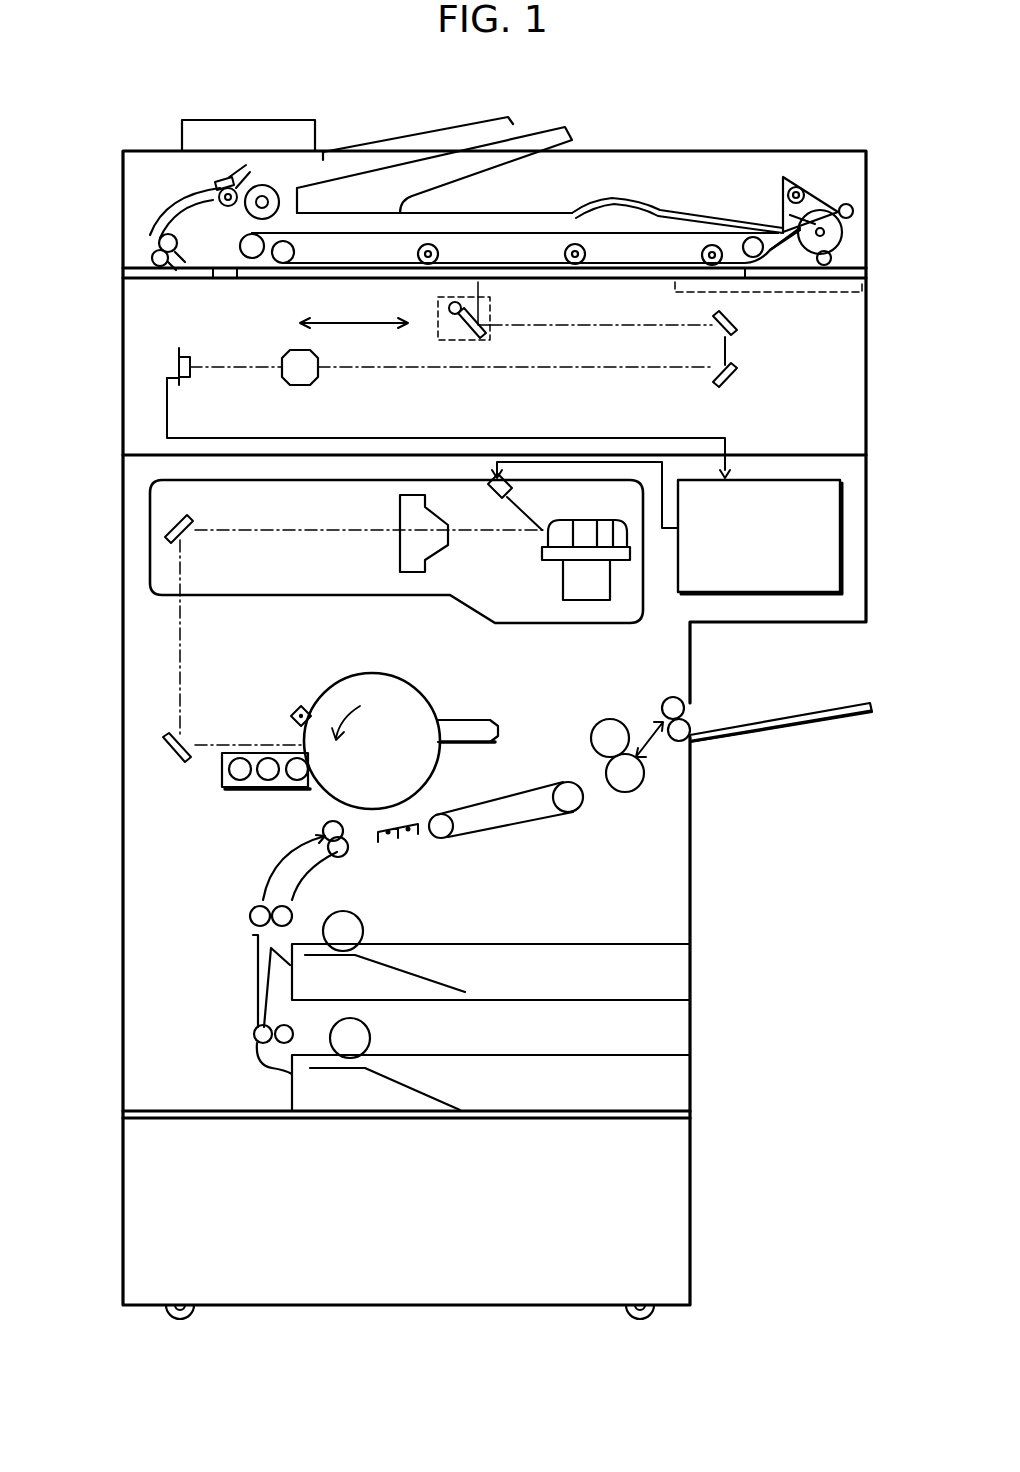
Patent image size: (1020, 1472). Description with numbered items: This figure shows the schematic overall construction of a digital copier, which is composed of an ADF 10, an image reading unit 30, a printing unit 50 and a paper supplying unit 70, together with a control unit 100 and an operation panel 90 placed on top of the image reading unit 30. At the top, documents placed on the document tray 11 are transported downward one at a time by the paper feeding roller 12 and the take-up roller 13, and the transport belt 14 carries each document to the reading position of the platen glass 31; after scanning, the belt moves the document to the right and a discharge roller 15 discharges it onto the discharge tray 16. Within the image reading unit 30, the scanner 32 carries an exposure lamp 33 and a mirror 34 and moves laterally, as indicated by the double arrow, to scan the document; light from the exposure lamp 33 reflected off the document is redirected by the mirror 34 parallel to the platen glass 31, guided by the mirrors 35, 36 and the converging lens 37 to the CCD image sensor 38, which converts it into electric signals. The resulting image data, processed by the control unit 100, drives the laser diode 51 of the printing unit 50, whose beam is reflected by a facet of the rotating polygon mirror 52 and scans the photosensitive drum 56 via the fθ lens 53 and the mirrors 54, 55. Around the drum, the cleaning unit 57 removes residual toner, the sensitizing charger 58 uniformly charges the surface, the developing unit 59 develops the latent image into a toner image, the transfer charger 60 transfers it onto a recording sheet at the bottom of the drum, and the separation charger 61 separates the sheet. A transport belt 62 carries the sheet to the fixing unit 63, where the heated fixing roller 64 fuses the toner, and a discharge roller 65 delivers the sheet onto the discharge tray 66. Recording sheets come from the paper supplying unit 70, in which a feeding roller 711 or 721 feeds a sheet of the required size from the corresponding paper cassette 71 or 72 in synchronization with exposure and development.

The ADF 10 is at (107, 215).
The document tray 11 is at (433, 131).
The paper feeding roller 12 is at (268, 185).
The take-up roller 13 is at (232, 165).
The transport belt 14 is at (478, 232).
The discharge roller 15 is at (804, 190).
The discharge tray 16 is at (678, 198).
The image reading unit 30 is at (107, 360).
The platen glass 31 is at (620, 280).
The scanner 32 is at (492, 310).
The exposure lamp 33 is at (448, 305).
The mirror 34 is at (490, 332).
The mirror 35 is at (737, 322).
The mirror 36 is at (732, 382).
The converging lens 37 is at (288, 382).
The CCD image sensor 38 is at (192, 362).
The printing unit 50 is at (107, 615).
The laser diode 51 is at (487, 490).
The polygon mirror 52 is at (562, 570).
The fθ lens 53 is at (400, 556).
The mirror 54 is at (183, 520).
The mirror 55 is at (166, 730).
The photosensitive drum 56 is at (392, 672).
The cleaning unit 57 is at (496, 722).
The sensitizing charger 58 is at (294, 706).
The developing unit 59 is at (232, 795).
The transfer charger 60 is at (384, 842).
The separation charger 61 is at (418, 838).
The transport belt 62 is at (470, 800).
The fixing unit 63 is at (577, 742).
The fixing roller 64 is at (608, 790).
The discharge roller 65 is at (666, 698).
The discharge tray 66 is at (856, 700).
The paper supplying unit 70 is at (107, 990).
The paper cassette 71 is at (570, 946).
The paper cassette 72 is at (570, 1064).
The operation panel 90 is at (868, 290).
The control unit 100 is at (832, 548).
The feeding roller 711 is at (380, 898).
The feeding roller 721 is at (372, 1040).